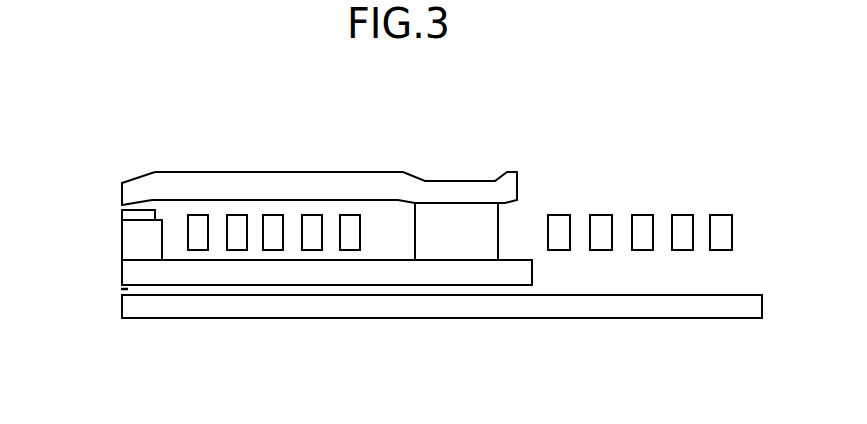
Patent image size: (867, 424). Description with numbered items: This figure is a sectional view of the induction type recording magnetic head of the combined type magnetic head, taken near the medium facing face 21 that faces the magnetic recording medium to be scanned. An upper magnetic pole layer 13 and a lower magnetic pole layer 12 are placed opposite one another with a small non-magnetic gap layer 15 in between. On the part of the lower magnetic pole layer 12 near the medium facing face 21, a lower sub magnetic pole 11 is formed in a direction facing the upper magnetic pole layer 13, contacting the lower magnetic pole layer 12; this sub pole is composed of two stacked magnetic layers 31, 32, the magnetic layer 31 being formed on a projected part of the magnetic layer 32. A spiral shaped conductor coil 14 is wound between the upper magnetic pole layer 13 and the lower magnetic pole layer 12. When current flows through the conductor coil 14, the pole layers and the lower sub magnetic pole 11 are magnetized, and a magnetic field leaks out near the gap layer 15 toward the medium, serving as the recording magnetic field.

The lower sub magnetic pole 11 is at (87, 234).
The lower magnetic pole layer 12 is at (122, 280).
The upper magnetic pole layer 13 is at (173, 183).
The conductor coil 14 is at (359, 216).
The gap layer 15 is at (120, 205).
The medium facing face 21 is at (120, 303).
The magnetic layer 31 is at (122, 216).
The magnetic layer 32 is at (127, 248).